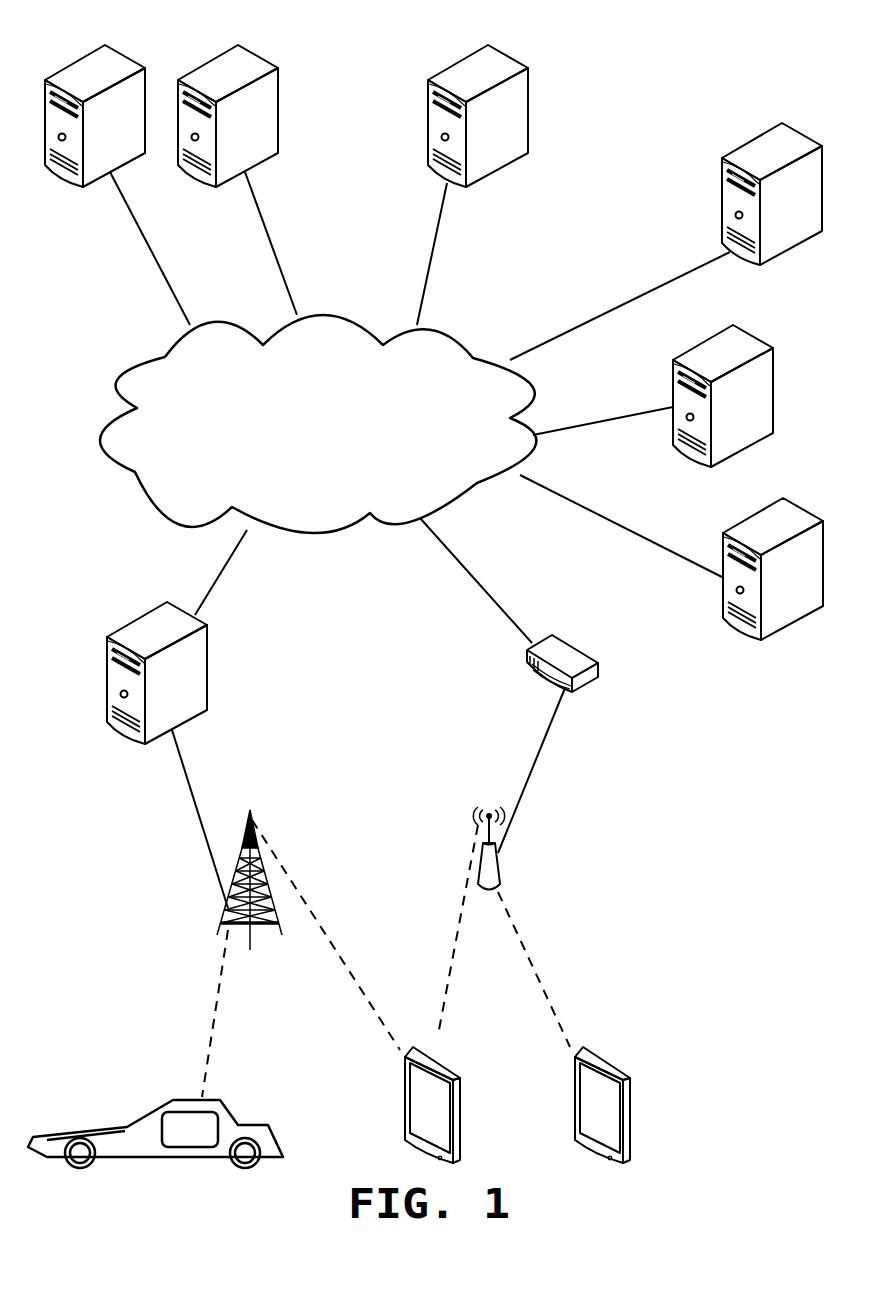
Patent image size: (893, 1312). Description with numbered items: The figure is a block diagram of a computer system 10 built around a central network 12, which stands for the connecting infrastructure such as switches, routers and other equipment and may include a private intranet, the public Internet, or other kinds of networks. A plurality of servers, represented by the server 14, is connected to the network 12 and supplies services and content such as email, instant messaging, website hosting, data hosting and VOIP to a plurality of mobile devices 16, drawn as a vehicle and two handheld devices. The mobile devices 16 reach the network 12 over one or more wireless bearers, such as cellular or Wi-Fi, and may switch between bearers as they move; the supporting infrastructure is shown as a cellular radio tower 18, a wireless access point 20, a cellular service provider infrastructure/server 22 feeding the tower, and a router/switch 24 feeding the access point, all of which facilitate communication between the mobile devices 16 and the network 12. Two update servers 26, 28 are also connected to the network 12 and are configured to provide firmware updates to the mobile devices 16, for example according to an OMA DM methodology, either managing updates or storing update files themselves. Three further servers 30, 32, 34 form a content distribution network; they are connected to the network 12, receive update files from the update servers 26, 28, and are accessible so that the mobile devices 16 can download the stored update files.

The computer system 10 is at (668, 58).
The network 12 is at (307, 449).
The server 14 is at (484, 136).
The mobile device 16 is at (181, 1139).
The cellular radio tower 18 is at (225, 913).
The wireless access point 20 is at (490, 877).
The cellular service provider infrastructure/server 22 is at (163, 693).
The router/switch 24 is at (553, 657).
The update server 26 is at (101, 136).
The update server 28 is at (234, 136).
The CDN server 30 is at (778, 214).
The CDN server 32 is at (729, 416).
The CDN server 34 is at (779, 589).